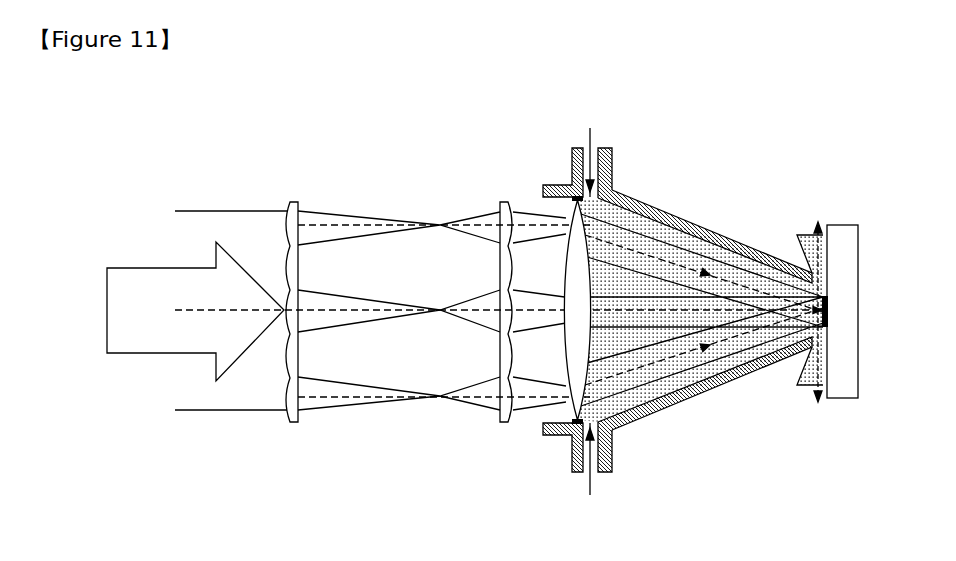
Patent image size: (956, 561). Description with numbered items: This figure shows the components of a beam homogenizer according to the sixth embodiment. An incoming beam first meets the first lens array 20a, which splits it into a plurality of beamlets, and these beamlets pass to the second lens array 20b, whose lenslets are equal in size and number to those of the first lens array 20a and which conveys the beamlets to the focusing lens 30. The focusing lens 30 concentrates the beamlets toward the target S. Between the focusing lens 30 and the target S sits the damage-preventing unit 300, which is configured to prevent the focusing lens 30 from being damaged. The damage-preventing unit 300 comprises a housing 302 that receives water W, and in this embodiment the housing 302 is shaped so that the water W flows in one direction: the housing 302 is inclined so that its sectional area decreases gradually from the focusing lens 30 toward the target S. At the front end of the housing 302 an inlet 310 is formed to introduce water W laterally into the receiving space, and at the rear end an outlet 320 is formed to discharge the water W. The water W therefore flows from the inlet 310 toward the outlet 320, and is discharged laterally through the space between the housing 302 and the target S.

The first lens array 20a is at (298, 416).
The second lens array 20b is at (503, 416).
The focusing lens 30 is at (548, 405).
The damage-preventing unit 300 is at (655, 300).
The inlet 310 is at (613, 168).
The housing 302 is at (657, 211).
The outlet 320 is at (812, 368).
The water W is at (697, 225).
The target S is at (847, 223).